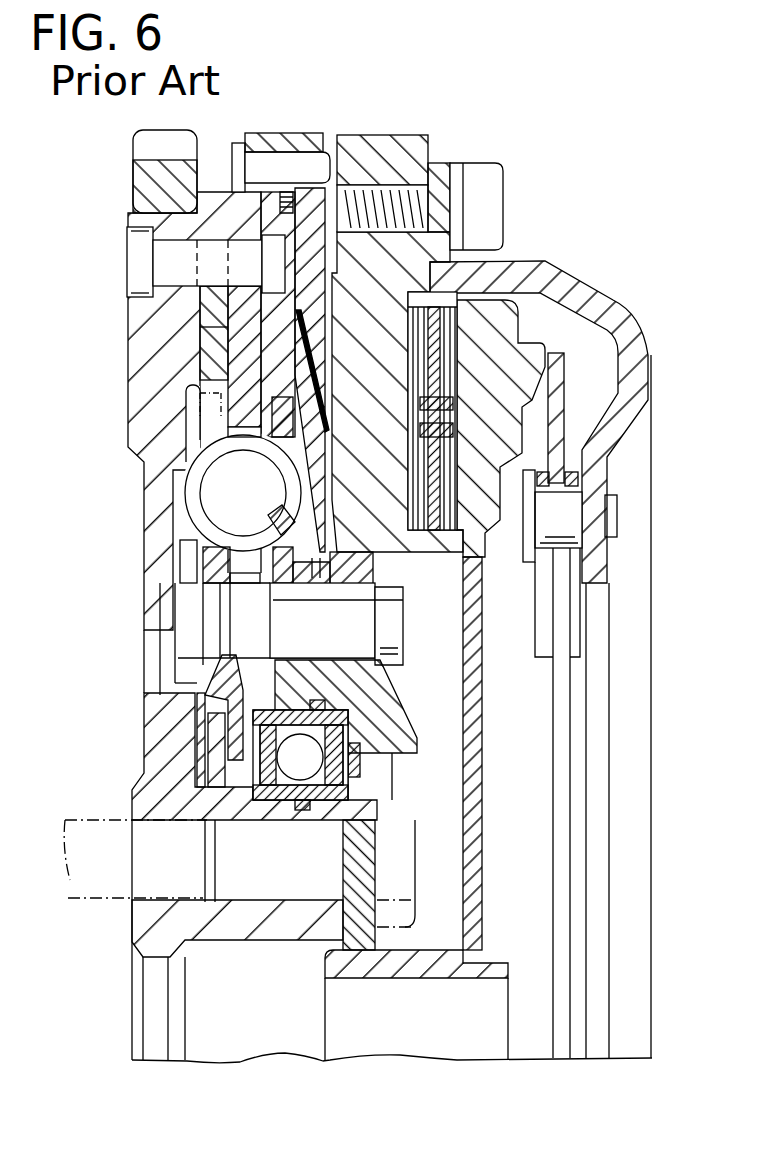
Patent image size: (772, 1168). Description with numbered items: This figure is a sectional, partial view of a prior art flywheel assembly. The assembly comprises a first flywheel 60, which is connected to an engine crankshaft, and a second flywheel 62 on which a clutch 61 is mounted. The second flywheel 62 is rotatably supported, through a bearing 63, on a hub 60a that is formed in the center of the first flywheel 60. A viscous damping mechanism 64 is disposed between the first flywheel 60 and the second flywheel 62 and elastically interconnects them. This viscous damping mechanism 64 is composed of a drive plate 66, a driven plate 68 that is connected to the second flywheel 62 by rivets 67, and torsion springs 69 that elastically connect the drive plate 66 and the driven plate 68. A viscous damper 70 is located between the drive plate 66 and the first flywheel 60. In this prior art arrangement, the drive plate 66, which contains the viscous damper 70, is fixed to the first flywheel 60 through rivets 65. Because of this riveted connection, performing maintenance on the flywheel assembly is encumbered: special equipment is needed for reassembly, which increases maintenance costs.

The first flywheel 60 is at (147, 390).
The hub 60a is at (323, 810).
The clutch 61 is at (567, 261).
The second flywheel 62 is at (397, 147).
The bearing 63 is at (360, 720).
The viscous damping mechanism 64 is at (183, 473).
The rivets 65 is at (138, 256).
The drive plate 66 is at (243, 337).
The rivets 67 is at (245, 616).
The driven plate 68 is at (283, 381).
The torsion springs 69 is at (187, 505).
The viscous damper 70 is at (190, 315).